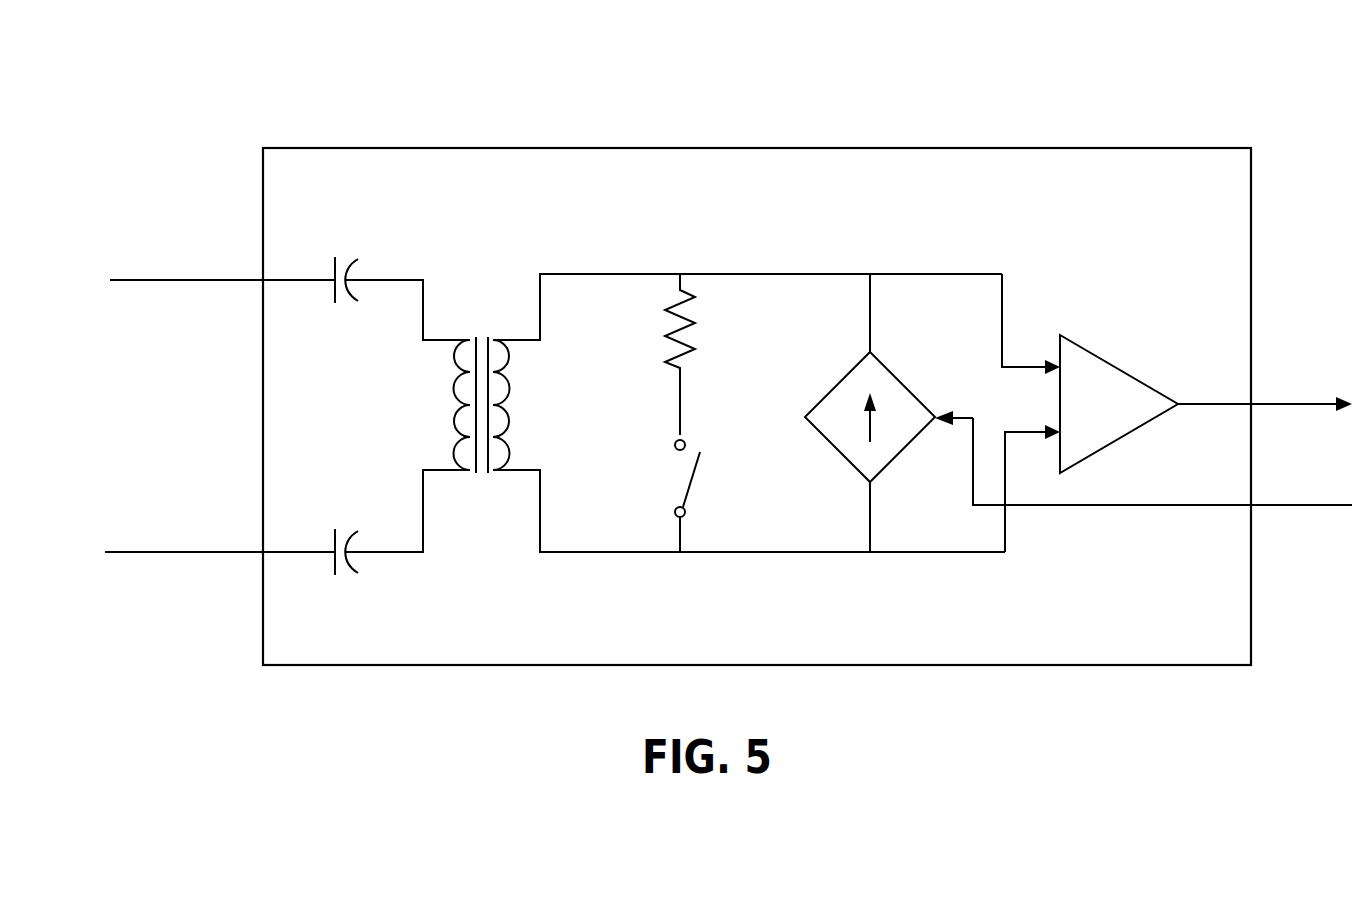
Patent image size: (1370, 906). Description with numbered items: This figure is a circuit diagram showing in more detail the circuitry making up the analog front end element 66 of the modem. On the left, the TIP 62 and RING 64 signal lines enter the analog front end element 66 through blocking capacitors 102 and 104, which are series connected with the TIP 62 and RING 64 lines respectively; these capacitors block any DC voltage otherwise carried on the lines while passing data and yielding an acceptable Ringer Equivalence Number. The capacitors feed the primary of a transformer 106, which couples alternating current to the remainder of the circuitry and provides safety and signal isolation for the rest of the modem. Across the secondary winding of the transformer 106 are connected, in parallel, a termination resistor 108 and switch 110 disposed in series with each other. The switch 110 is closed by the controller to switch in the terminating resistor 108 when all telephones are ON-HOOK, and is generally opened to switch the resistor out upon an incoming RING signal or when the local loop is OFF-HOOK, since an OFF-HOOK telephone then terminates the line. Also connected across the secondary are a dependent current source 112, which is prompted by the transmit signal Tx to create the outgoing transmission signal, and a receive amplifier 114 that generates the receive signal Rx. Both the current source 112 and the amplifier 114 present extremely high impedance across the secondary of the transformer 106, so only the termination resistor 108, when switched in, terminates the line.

The TIP signal line 62 is at (137, 278).
The RING signal line 64 is at (137, 550).
The analog front end element 66 is at (757, 98).
The blocking capacitor 102 is at (350, 270).
The blocking capacitor 104 is at (350, 543).
The transformer 106 is at (478, 298).
The termination resistor 108 is at (695, 350).
The switch 110 is at (693, 483).
The dependent current source 112 is at (895, 375).
The receive amplifier 114 is at (1117, 363).